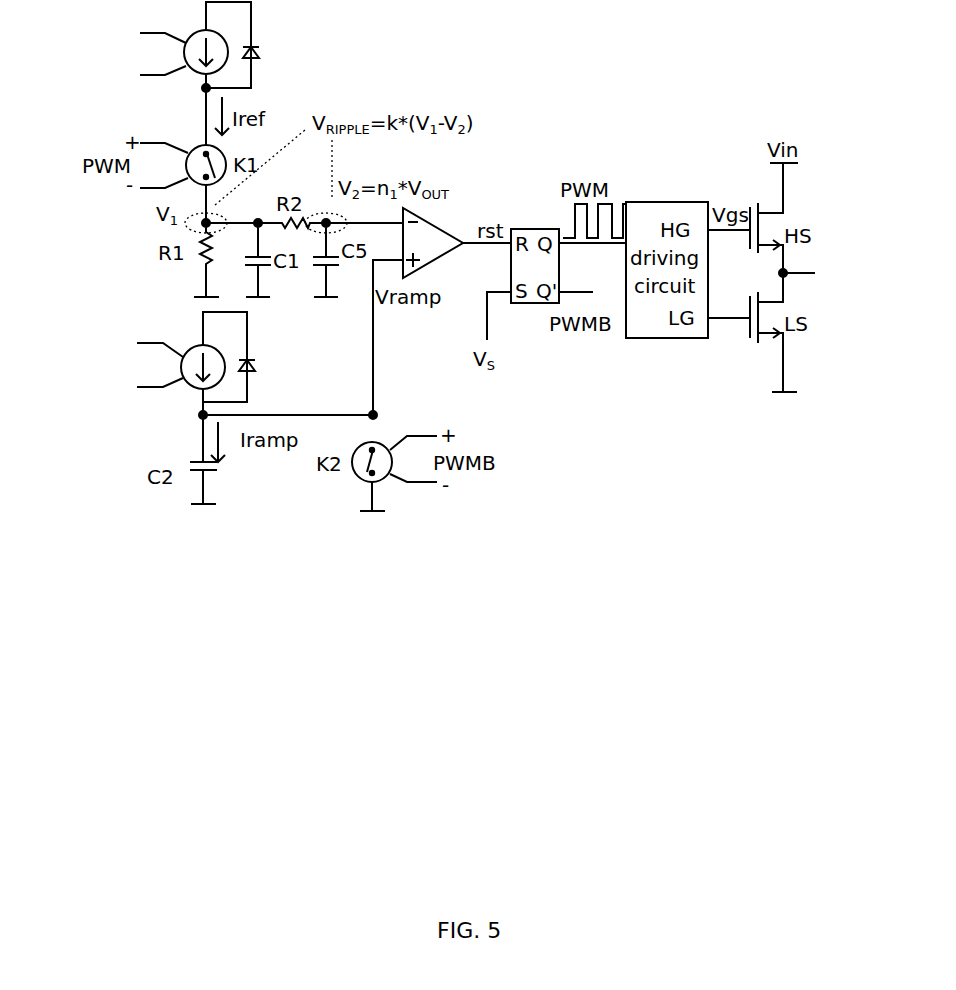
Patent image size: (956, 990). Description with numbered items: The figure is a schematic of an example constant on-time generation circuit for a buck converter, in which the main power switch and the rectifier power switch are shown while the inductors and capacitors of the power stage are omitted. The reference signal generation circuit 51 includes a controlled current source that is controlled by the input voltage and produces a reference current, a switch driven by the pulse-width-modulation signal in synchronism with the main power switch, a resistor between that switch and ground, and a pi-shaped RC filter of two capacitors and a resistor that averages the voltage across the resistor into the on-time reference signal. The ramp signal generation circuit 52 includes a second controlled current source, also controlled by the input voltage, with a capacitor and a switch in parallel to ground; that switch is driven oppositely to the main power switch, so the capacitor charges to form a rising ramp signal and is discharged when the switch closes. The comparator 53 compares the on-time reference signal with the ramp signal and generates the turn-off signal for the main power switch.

The reference signal generation circuit 51 is at (278, 73).
The ramp signal generation circuit 52 is at (278, 365).
The comparator 53 is at (442, 253).